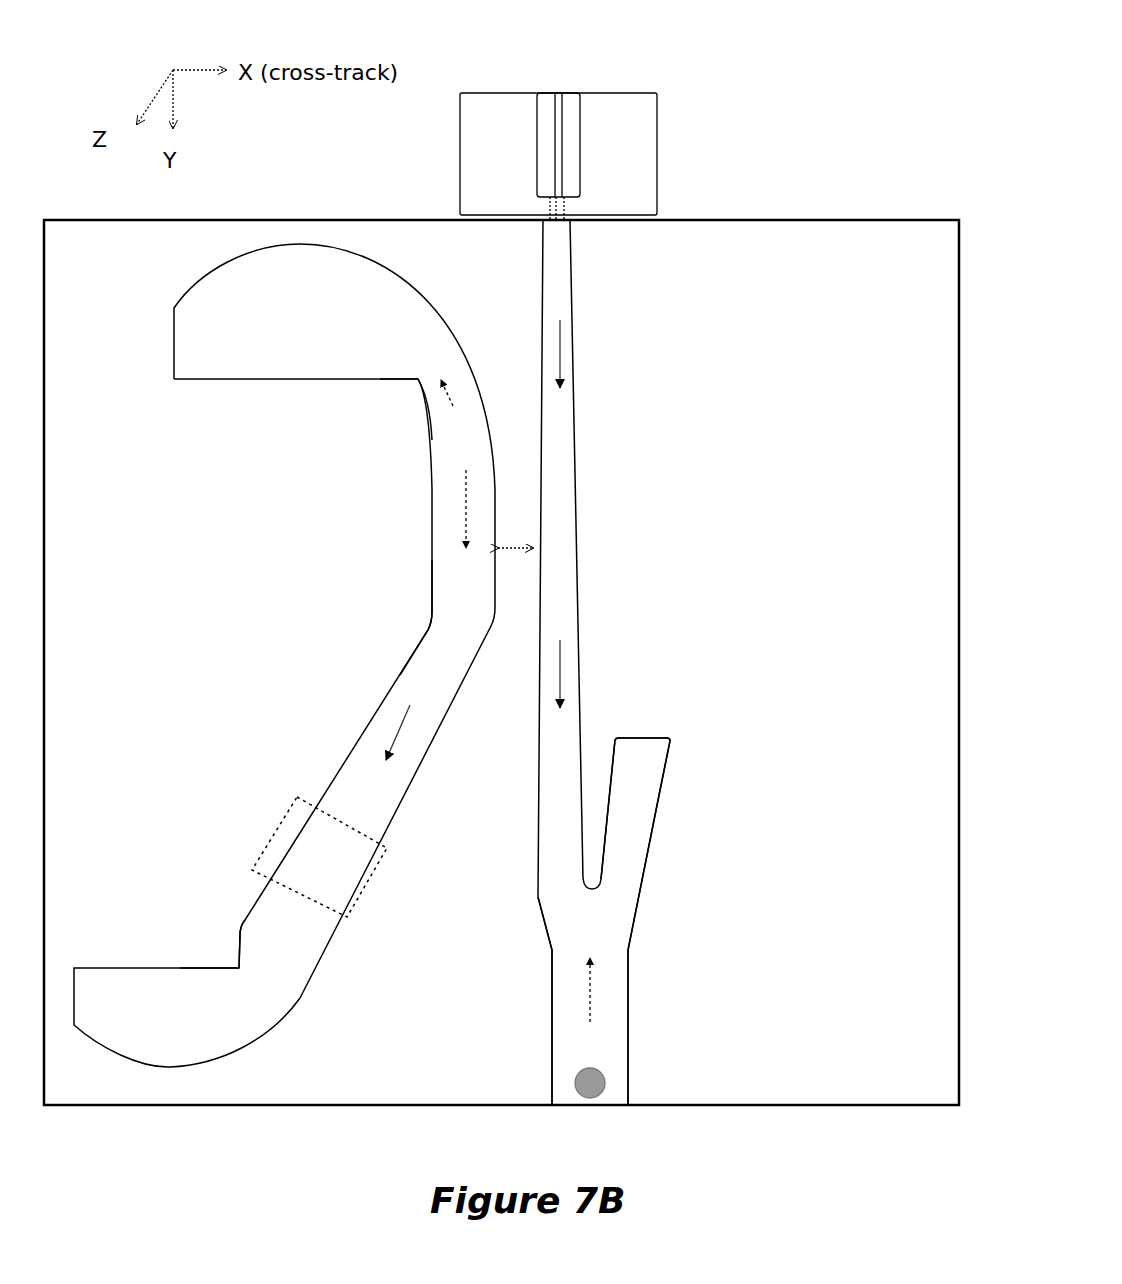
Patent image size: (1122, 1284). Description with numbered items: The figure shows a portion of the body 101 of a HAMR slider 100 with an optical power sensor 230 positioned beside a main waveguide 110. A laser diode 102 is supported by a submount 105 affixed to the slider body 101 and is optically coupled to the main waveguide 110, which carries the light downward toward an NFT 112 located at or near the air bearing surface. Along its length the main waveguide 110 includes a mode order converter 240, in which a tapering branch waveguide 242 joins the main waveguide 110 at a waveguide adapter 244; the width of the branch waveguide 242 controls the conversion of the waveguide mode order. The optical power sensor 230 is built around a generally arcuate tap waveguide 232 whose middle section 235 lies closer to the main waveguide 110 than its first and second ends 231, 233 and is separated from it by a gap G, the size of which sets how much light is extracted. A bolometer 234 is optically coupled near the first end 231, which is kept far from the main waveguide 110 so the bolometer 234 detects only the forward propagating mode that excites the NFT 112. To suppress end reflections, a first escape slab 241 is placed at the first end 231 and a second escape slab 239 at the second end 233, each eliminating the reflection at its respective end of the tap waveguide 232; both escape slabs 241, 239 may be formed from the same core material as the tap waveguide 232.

The HAMR slider 100 is at (641, 113).
The slider body 101 is at (501, 662).
The laser diode 102 is at (570, 178).
The submount 105 is at (599, 156).
The main waveguide 110 is at (594, 533).
The NFT 112 is at (608, 1070).
The optical power sensor 230 is at (303, 669).
The first end 231 is at (218, 958).
The tap waveguide 232 is at (424, 449).
The second end 233 is at (406, 398).
The bolometer 234 is at (370, 888).
The middle section 235 is at (398, 566).
The second escape slab 239 is at (198, 283).
The mode order converter 240 is at (673, 892).
The first escape slab 241 is at (235, 1053).
The branch waveguide 242 is at (680, 768).
The waveguide adapter 244 is at (650, 930).